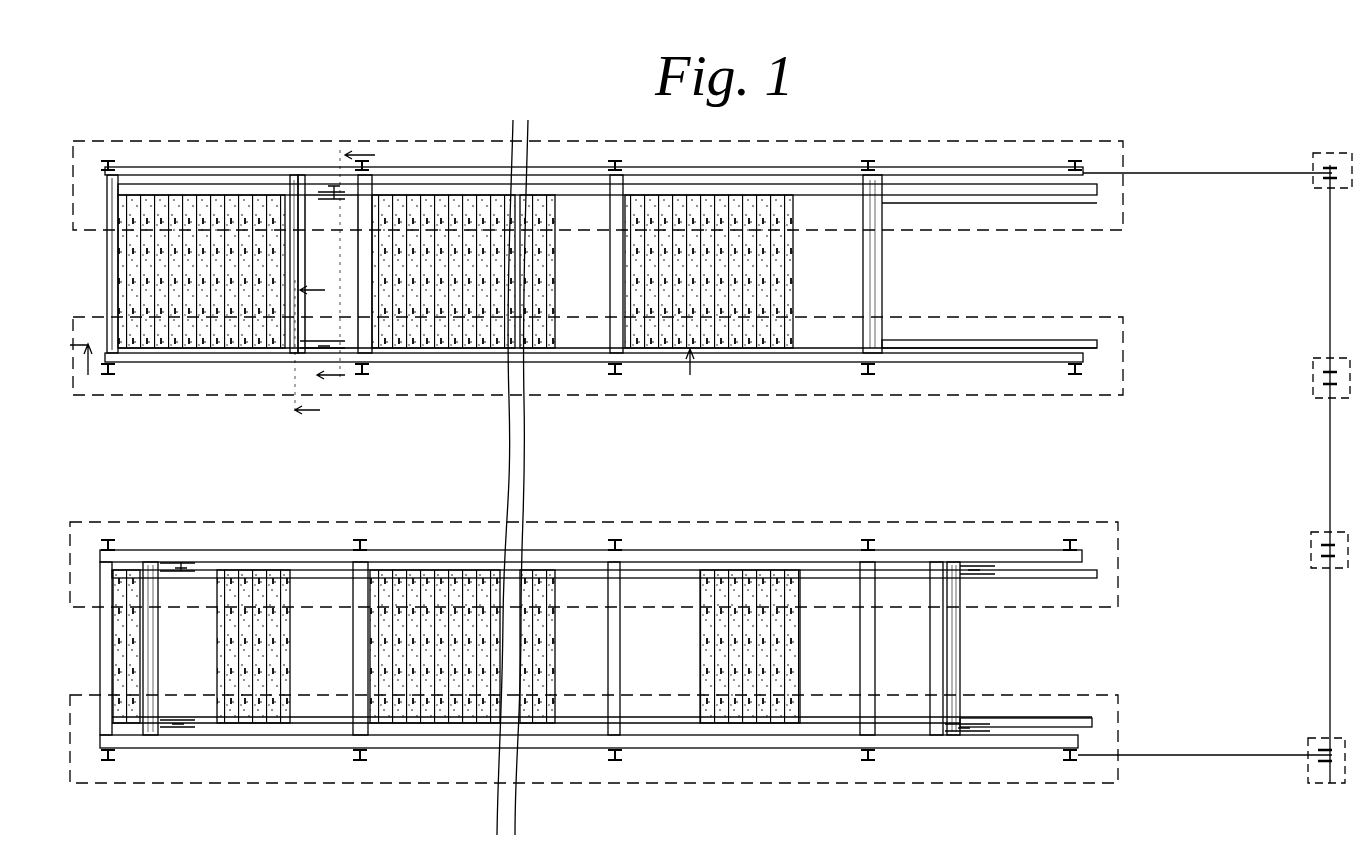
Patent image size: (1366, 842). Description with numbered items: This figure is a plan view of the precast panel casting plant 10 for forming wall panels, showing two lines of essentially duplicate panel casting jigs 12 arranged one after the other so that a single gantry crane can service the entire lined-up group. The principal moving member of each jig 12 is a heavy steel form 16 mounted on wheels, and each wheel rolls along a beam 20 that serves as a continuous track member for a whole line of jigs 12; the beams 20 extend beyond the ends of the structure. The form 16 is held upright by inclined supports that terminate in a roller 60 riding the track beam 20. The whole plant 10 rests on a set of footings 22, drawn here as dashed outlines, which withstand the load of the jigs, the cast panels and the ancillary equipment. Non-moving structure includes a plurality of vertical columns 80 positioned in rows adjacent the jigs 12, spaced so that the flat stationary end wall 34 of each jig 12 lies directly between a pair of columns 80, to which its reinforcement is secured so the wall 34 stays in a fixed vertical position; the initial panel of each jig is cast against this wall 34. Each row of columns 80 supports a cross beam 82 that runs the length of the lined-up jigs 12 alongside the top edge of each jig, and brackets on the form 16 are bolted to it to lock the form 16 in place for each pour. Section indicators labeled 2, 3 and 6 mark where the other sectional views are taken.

The panel casting plant 10 is at (267, 152).
The panel casting jig 12 is at (150, 355).
The form 16 is at (295, 355).
The beam 20 is at (962, 203).
The footings 22 is at (143, 395).
The stationary wall 34 is at (107, 273).
The roller 60 is at (333, 196).
The vertical columns 80 is at (110, 162).
The cross beam 82 is at (780, 362).
The section line 2 is at (387, 369).
The section line 3 is at (353, 270).
The section line 6 is at (317, 355).